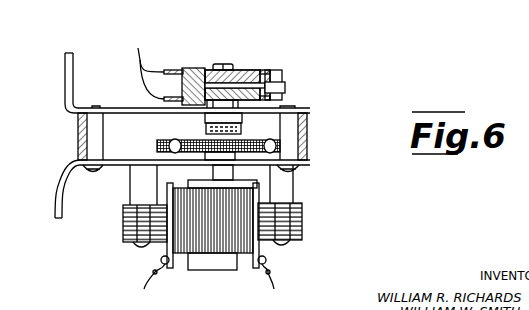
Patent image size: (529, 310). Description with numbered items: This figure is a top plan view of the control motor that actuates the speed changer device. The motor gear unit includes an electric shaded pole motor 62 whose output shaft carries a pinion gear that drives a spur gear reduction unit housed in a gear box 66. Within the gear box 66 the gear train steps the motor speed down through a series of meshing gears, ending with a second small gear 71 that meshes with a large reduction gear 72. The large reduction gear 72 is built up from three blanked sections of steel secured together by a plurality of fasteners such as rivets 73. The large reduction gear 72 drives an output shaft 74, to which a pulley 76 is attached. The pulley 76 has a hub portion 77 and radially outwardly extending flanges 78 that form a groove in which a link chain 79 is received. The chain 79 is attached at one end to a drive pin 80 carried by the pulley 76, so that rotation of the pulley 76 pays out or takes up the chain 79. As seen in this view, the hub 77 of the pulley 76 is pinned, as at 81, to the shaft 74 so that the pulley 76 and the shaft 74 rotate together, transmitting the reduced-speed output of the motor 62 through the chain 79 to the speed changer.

The shaded pole motor 62 is at (302, 230).
The gear box 66 is at (310, 163).
The second small gear 71 is at (205, 121).
The large reduction gear 72 is at (157, 146).
The rivets 73 is at (300, 137).
The output shaft 74 is at (225, 64).
The pulley 76 is at (247, 70).
The hub portion 77 is at (256, 70).
The flanges 78 is at (150, 66).
The link chain 79 is at (283, 91).
The drive pin 80 is at (285, 83).
The pin 81 is at (207, 70).